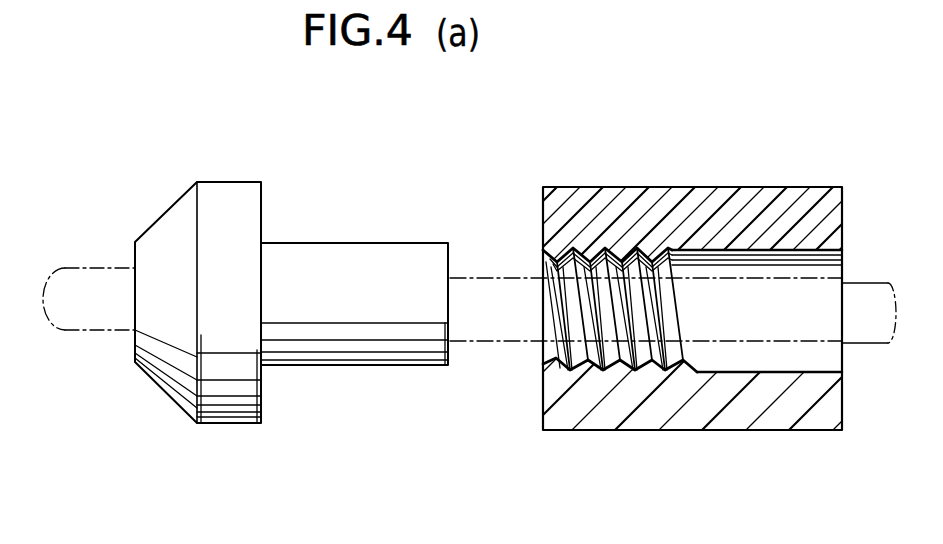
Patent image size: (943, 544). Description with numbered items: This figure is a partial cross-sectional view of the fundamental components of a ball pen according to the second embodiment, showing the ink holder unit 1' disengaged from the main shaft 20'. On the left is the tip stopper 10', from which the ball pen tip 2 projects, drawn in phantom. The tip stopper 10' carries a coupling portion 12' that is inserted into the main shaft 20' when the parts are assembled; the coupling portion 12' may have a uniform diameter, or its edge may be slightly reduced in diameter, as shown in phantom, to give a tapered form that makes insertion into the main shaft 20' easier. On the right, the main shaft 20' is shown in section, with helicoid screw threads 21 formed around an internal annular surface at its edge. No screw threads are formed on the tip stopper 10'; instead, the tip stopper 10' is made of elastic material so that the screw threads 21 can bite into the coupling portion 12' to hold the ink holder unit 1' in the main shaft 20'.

The ball pen tip 2 is at (110, 335).
The tip stopper 10' is at (198, 345).
The coupling portion 12' is at (354, 265).
The ink holder unit 1' is at (673, 364).
The main shaft 20' is at (692, 336).
The helicoid screw threads 21 is at (540, 267).